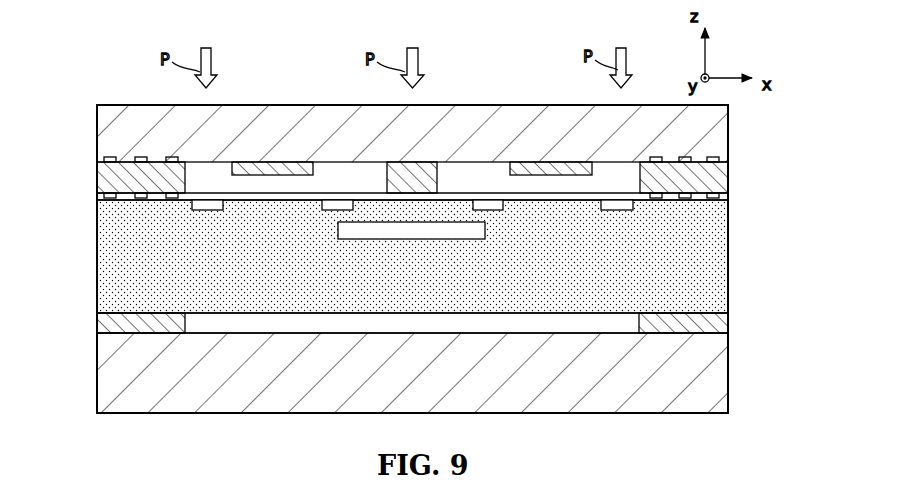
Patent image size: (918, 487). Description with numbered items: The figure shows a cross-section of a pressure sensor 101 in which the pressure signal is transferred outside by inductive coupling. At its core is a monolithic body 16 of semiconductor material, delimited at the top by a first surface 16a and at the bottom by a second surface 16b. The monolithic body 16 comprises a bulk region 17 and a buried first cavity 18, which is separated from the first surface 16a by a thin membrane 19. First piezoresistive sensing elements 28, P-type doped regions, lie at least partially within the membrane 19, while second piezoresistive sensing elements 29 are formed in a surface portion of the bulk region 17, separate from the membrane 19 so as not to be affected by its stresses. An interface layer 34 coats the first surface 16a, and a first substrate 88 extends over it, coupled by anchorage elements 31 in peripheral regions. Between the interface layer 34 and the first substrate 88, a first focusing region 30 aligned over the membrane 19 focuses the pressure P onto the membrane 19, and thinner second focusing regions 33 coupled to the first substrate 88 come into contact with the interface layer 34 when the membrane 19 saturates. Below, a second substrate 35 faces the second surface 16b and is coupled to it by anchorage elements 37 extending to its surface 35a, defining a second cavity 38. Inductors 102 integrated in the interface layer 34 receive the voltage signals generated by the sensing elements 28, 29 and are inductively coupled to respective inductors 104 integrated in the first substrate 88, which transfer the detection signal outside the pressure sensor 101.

The pressure sensor 101 is at (386, 211).
The inductors 104 is at (138, 146).
The first substrate 88 is at (100, 127).
The anchorage elements 31 is at (100, 174).
The second focusing regions 33 is at (287, 172).
The first focusing region 30 is at (400, 176).
The first surface 16a is at (597, 196).
The interface layer 34 is at (728, 197).
The inductors 102 is at (126, 207).
The second piezoresistive sensing elements 29 is at (208, 211).
The first piezoresistive sensing elements 28 is at (324, 211).
The first cavity 18 is at (396, 232).
The membrane 19 is at (421, 212).
The monolithic body 16 is at (715, 282).
The bulk region 17 is at (134, 291).
The anchorage elements 37 is at (100, 323).
The second substrate 35 is at (105, 367).
The surface 35a is at (552, 329).
The second cavity 38 is at (333, 322).
The second surface 16b is at (617, 317).